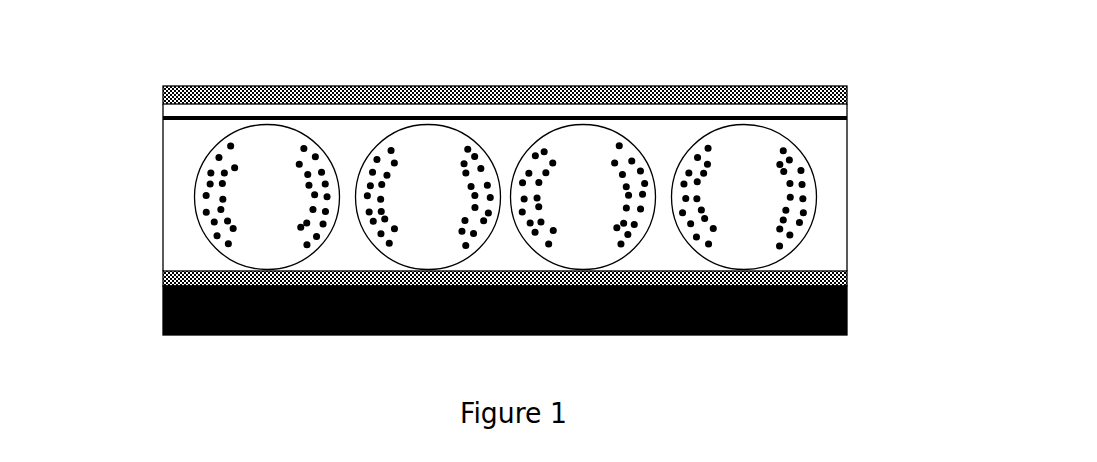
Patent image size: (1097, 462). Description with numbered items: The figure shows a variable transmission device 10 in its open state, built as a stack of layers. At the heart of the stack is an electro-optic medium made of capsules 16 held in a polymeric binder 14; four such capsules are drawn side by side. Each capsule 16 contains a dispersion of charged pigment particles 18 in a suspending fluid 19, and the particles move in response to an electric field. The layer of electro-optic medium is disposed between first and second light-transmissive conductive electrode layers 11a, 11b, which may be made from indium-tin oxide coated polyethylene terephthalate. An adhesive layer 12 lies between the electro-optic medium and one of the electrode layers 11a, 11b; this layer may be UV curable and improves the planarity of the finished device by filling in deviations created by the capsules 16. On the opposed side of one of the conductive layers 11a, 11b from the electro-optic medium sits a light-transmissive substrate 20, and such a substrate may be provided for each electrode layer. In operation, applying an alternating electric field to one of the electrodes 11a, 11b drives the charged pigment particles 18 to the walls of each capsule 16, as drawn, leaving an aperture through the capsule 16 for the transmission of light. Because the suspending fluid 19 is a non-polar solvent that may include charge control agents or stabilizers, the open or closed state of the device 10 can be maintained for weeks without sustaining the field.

The variable transmission device 10 is at (500, 187).
The first electrode layer 11a is at (848, 90).
The second electrode layer 11b is at (848, 280).
The adhesive layer 12 is at (848, 113).
The polymeric binder 14 is at (847, 200).
The capsules 16 is at (200, 235).
The charged pigment particles 18 is at (202, 183).
The suspending fluid 19 is at (282, 210).
The light-transmissive substrate 20 is at (162, 305).